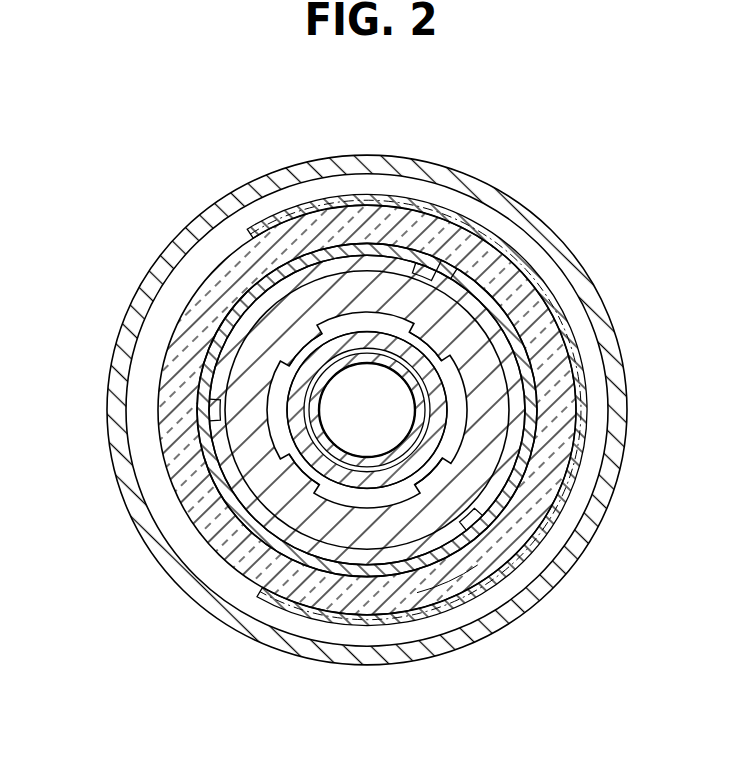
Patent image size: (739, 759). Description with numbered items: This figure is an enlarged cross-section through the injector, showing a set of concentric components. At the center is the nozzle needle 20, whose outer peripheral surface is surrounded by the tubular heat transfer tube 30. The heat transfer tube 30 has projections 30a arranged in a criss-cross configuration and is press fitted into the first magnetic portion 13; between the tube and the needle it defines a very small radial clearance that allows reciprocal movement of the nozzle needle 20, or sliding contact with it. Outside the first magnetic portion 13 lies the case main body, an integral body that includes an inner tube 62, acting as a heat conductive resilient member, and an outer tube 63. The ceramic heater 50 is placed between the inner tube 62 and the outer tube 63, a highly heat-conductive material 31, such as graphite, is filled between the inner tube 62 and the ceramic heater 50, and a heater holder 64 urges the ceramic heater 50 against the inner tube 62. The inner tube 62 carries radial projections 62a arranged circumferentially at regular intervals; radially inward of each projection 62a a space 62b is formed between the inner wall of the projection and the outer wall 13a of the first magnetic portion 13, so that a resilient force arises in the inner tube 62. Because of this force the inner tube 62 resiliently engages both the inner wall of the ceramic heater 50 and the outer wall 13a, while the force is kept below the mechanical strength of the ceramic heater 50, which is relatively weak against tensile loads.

The first magnetic portion 13 is at (253, 340).
The outer wall of the first magnetic portion 13a is at (435, 287).
The nozzle needle 20 is at (445, 396).
The heat transfer tube 30 is at (355, 338).
The projections 30a is at (310, 350).
The highly heat-conductive material 31 is at (500, 332).
The ceramic heater 50 is at (447, 587).
The inner tube 62 is at (505, 518).
The radial projections 62a is at (427, 258).
The space 62b is at (490, 265).
The outer tube 63 is at (612, 487).
The heater holder 64 is at (585, 430).